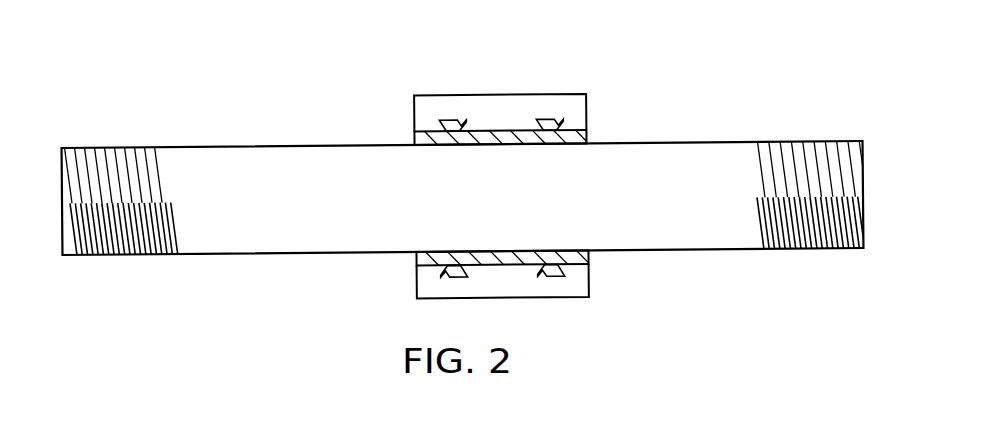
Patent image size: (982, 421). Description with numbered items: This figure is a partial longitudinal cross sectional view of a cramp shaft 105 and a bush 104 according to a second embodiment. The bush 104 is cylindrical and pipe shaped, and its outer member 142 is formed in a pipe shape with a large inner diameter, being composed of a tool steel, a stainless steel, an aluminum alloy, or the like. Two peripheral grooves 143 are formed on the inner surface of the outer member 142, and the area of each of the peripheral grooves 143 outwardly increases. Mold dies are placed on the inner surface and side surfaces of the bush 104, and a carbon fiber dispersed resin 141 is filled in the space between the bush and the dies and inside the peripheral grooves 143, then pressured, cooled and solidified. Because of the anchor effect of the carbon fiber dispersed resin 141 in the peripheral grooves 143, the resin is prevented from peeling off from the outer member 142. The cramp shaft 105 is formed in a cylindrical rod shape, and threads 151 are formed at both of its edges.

The bush 104 is at (520, 85).
The cramp shaft 105 is at (653, 153).
The carbon fiber dispersed resin 141 is at (425, 135).
The outer member 142 is at (423, 107).
The peripheral grooves 143 is at (457, 120).
The threads 151 is at (110, 155).